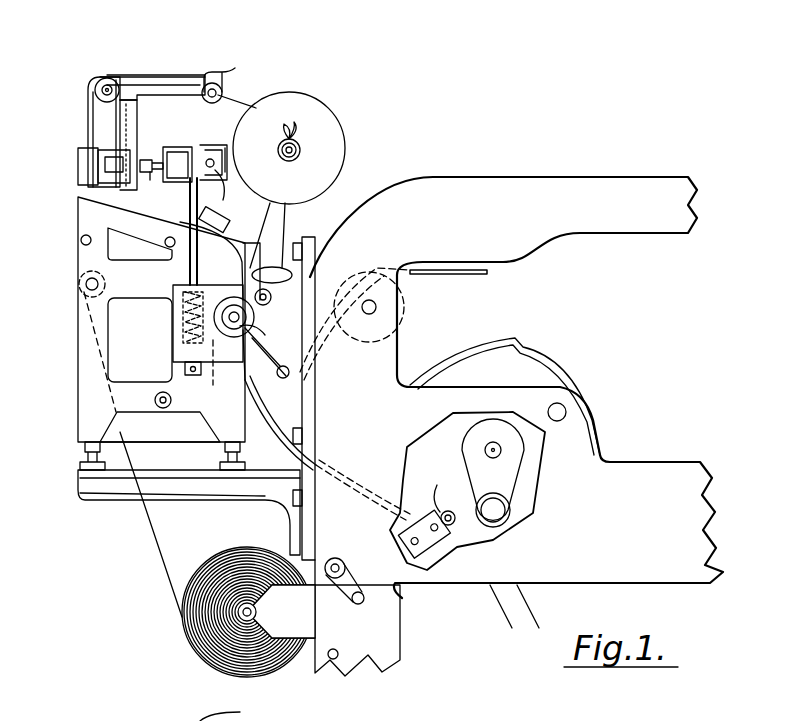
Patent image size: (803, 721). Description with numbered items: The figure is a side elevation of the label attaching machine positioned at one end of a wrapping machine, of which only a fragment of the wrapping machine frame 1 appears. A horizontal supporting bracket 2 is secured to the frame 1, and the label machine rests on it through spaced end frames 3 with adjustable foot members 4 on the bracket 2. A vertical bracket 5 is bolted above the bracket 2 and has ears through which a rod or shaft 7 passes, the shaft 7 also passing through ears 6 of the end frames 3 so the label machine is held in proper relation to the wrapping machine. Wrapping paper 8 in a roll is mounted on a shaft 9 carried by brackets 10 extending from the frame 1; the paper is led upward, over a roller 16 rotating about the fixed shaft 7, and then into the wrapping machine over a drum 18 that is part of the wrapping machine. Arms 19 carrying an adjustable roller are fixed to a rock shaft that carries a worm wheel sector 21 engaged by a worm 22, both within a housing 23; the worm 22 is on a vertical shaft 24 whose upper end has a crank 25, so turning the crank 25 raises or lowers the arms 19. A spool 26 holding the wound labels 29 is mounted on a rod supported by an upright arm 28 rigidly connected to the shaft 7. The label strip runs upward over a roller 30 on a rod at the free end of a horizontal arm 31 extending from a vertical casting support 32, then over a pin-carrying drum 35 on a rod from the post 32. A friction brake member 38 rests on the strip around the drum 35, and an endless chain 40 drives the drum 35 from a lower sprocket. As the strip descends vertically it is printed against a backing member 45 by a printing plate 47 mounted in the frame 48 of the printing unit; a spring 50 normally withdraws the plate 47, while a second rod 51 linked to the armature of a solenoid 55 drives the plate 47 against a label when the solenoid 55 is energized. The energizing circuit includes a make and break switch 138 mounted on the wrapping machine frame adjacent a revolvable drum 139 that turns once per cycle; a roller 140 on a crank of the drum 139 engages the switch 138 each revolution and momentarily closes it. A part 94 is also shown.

The wrapping machine frame 1 is at (402, 588).
The horizontal supporting bracket 2 is at (238, 496).
The end frame 3 is at (95, 305).
The adjustable foot member 4 is at (218, 456).
The vertical bracket 5 is at (296, 297).
The ear 6 is at (225, 300).
The rod or shaft 7 is at (269, 297).
The wrapping paper 8 is at (127, 447).
The shaft 9 is at (258, 613).
The bracket 10 is at (296, 630).
The roller 16 is at (255, 330).
The drum 18 is at (400, 305).
The arm 19 is at (264, 368).
The worm wheel sector 21 is at (219, 372).
The worm 22 is at (185, 318).
The housing 23 is at (183, 332).
The vertical shaft 24 is at (188, 272).
The crank 25 is at (236, 192).
The spool 26 is at (323, 132).
The upright arm 28 is at (287, 225).
The label 29 is at (240, 96).
The roller 30 is at (212, 150).
The horizontal arm 31 is at (162, 88).
The vertical casting support 32 is at (105, 118).
The drum 35 is at (95, 85).
The friction brake member 38 is at (145, 75).
The endless chain 40 is at (122, 120).
The backing member 45 is at (85, 165).
The printing plate 47 is at (105, 158).
The printing unit frame 48 is at (145, 160).
The spring 50 is at (150, 172).
The second rod 51 is at (218, 150).
The solenoid 55 is at (178, 162).
The block 94 is at (224, 222).
The make and break switch 138 is at (467, 491).
The revolvable drum 139 is at (545, 378).
The roller 140 is at (500, 506).